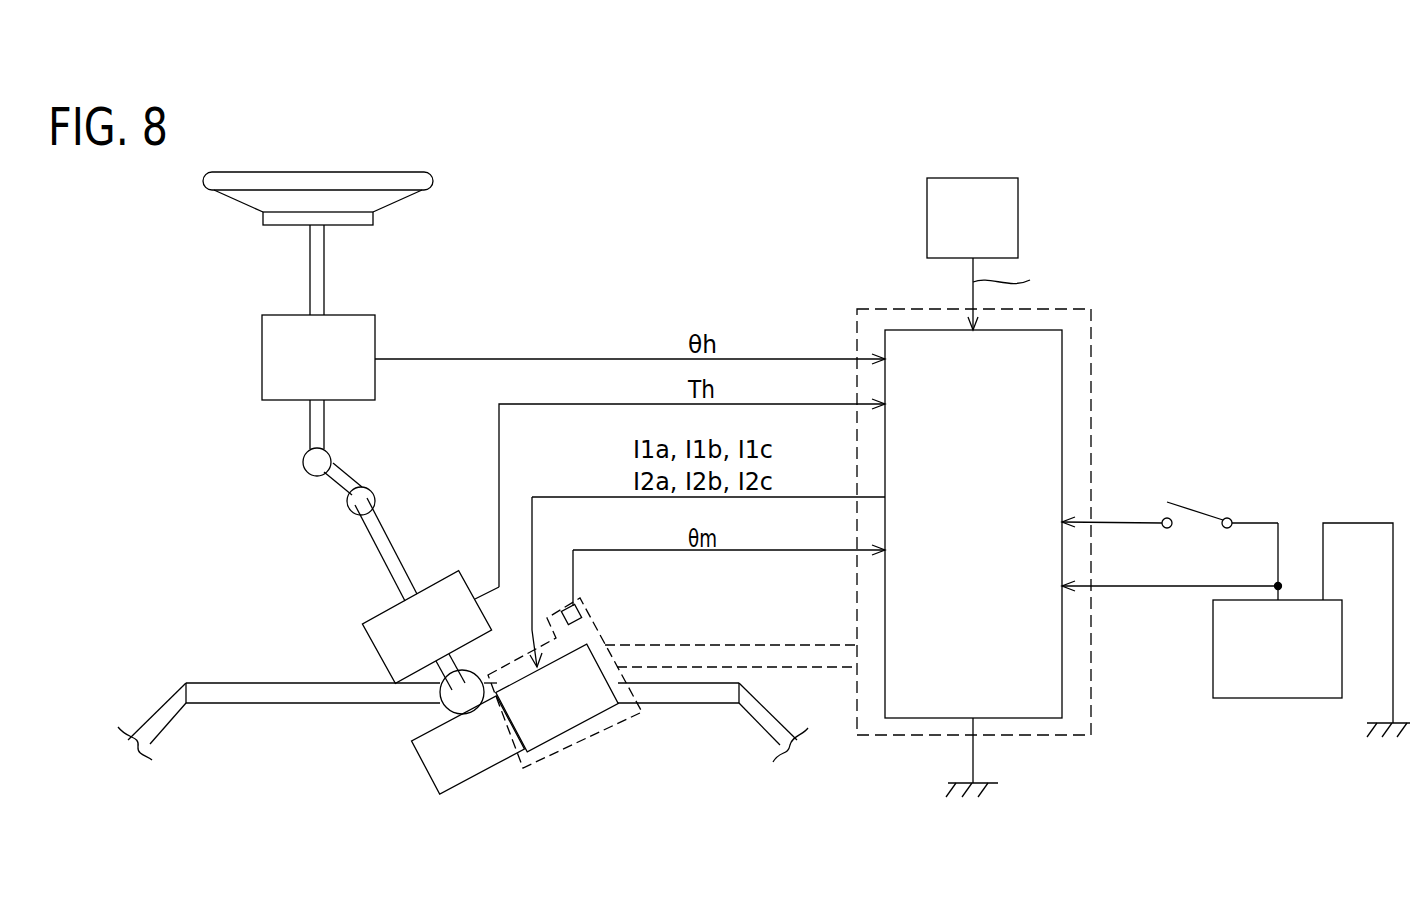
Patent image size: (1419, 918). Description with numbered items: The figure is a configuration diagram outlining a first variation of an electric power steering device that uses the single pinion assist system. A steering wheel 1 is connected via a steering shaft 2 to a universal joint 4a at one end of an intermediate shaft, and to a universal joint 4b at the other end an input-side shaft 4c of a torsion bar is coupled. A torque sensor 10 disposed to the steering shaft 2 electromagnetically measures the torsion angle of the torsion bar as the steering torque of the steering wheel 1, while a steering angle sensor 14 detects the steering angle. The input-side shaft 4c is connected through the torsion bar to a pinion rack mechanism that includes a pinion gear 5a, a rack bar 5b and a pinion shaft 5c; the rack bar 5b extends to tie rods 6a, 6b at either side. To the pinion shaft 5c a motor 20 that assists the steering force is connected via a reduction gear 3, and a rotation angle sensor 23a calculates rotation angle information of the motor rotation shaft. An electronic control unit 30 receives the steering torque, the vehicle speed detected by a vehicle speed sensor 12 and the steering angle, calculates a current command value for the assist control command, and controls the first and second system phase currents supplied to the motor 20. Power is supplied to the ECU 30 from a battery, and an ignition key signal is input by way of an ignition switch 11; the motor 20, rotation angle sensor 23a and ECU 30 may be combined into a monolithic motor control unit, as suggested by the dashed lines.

The steering wheel 1 is at (405, 172).
The steering shaft 2 is at (310, 268).
The steering angle sensor 14 is at (262, 357).
The universal joint 4a is at (303, 460).
The universal joint 4b is at (347, 510).
The input-side shaft 4c is at (382, 556).
The torque sensor 10 is at (440, 576).
The pinion shaft 5c is at (457, 661).
The pinion gear 5a is at (445, 713).
The rack bar 5b is at (278, 705).
The tie rod 6a is at (155, 710).
The tie rod 6b is at (770, 707).
The reduction gear 3 is at (420, 762).
The motor 20 is at (590, 723).
The rotation angle sensor 23a is at (585, 610).
The vehicle speed sensor 12 is at (1006, 178).
The electronic control unit 30 is at (1062, 358).
The ignition switch 11 is at (1232, 520).